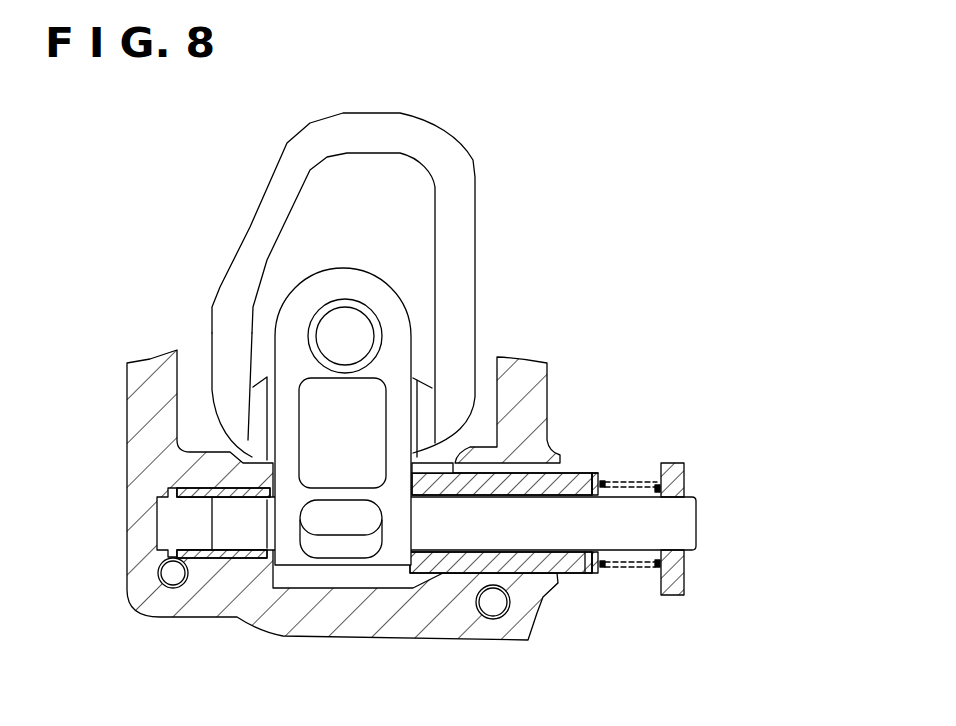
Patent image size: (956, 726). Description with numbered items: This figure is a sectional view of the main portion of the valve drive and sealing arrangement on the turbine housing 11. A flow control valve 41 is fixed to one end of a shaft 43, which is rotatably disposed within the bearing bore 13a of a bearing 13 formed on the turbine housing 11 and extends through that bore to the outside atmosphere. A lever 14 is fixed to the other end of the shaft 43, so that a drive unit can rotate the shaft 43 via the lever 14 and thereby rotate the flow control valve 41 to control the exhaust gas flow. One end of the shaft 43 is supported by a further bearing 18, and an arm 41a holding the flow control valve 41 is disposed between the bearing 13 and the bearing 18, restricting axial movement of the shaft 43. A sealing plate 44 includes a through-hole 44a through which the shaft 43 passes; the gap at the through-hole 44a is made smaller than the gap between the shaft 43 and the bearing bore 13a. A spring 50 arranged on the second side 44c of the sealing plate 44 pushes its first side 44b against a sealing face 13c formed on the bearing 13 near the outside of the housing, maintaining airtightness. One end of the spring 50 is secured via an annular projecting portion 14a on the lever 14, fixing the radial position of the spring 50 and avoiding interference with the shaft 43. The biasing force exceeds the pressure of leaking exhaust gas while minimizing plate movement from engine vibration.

The turbine housing 11 is at (145, 542).
The bearing 13 is at (535, 480).
The bearing bore 13a is at (463, 560).
The sealing face 13c is at (588, 545).
The lever 14 is at (677, 577).
The annular projecting portion 14a is at (672, 492).
The bearing 18 is at (197, 572).
The flow control valve 41 is at (413, 230).
The arm 41a is at (283, 567).
The shaft 43 is at (428, 540).
The sealing plate 44 is at (595, 473).
The through-hole 44a is at (588, 545).
The first side 44b is at (590, 473).
The second side 44c is at (605, 487).
The spring 50 is at (656, 568).